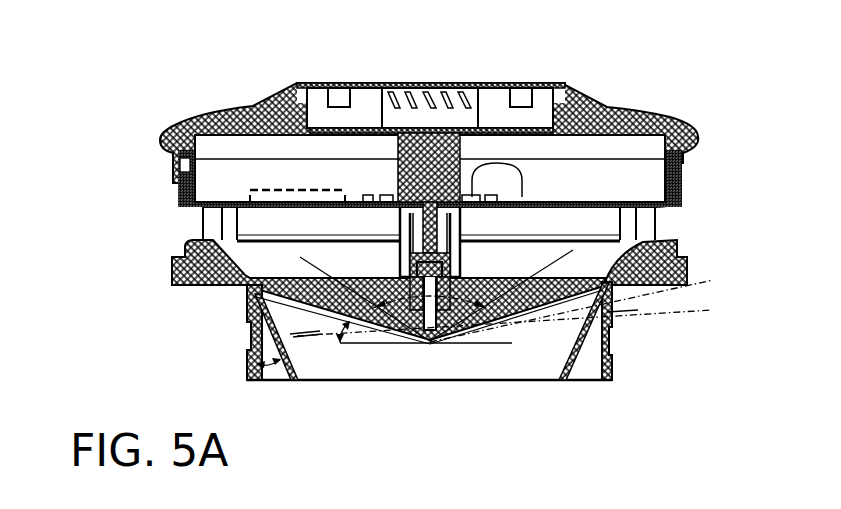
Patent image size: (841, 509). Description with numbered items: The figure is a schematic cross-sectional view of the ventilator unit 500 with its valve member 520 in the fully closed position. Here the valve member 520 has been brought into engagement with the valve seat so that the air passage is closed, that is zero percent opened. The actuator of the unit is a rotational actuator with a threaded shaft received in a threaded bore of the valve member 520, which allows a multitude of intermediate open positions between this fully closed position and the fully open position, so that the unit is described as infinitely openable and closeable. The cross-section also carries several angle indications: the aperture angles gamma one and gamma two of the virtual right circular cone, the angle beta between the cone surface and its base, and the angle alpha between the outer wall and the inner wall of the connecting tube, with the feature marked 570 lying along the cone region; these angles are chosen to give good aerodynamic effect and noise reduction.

The ventilator unit 500 is at (133, 95).
The valve member 520 is at (177, 243).
The conical cavity surface 570 is at (390, 342).